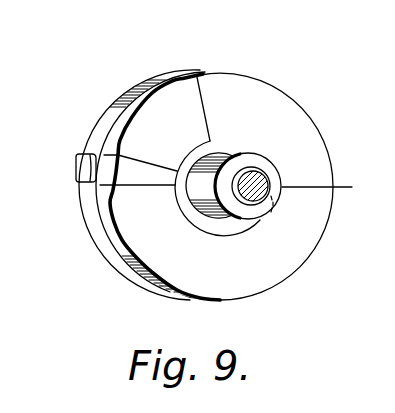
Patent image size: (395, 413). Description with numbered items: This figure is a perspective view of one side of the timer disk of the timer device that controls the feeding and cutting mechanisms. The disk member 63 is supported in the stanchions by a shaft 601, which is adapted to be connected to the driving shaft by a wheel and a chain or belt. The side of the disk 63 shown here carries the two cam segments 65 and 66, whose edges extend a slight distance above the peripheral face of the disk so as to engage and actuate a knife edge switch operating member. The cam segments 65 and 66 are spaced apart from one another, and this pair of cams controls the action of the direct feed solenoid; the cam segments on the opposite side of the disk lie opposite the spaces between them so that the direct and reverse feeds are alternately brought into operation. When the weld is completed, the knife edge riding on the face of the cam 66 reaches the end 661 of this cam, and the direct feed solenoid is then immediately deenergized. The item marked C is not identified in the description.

The disk member 63 is at (268, 102).
The cam segment 65 is at (163, 93).
The cam segment 66 is at (152, 245).
The shaft 601 is at (258, 192).
The end of cam 661 is at (335, 188).
The clip C is at (76, 167).